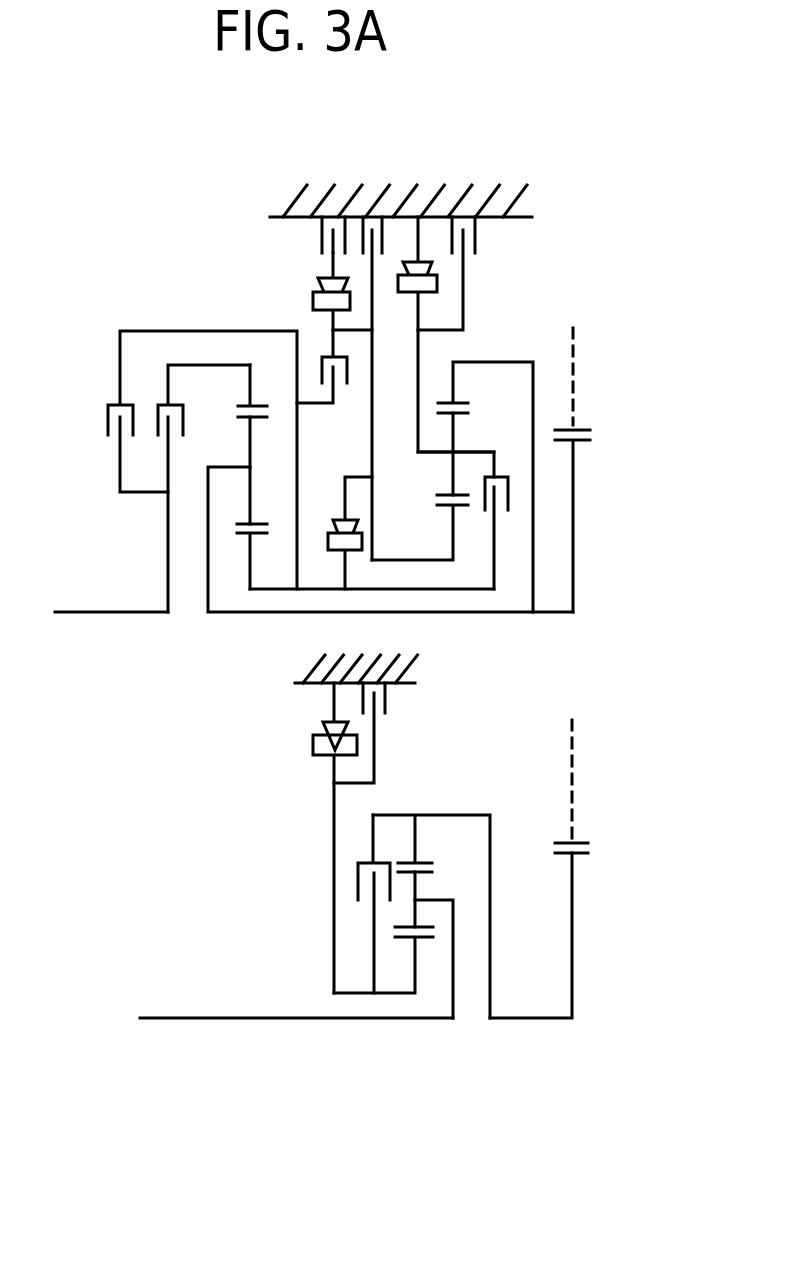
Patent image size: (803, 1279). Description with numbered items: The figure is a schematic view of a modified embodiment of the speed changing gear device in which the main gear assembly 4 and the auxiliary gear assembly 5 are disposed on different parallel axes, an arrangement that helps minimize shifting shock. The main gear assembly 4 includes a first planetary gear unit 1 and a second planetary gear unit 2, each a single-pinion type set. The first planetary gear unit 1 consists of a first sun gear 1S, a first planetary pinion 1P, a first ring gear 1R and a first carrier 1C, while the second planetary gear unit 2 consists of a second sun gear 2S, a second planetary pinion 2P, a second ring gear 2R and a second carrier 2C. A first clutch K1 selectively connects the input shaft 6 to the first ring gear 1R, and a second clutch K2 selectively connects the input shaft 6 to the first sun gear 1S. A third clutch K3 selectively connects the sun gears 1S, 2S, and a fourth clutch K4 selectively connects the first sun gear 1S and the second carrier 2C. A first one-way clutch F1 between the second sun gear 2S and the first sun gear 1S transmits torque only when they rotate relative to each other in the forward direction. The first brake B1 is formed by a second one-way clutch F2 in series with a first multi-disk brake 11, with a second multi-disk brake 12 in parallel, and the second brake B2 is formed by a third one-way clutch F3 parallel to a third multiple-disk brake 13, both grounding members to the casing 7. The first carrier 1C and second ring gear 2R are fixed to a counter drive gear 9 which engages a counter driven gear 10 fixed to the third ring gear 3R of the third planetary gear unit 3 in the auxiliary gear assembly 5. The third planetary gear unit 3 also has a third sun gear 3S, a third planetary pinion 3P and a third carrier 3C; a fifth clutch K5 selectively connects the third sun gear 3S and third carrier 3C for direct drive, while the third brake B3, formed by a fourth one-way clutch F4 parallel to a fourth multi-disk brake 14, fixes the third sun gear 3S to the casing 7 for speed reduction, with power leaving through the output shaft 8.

The first planetary gear unit 1 is at (374, 499).
The second planetary gear unit 2 is at (499, 489).
The third planetary gear unit 3 is at (406, 939).
The main gear assembly 4 is at (258, 614).
The auxiliary gear assembly 5 is at (467, 1060).
The input shaft 6 is at (75, 611).
The casing 7 is at (503, 197).
The output shaft 8 is at (190, 1016).
The counter drive gear 9 is at (574, 480).
The counter driven gear 10 is at (575, 370).
The first multi-disk brake 11 is at (322, 232).
The second multi-disk brake 12 is at (400, 216).
The third multiple-disk brake 13 is at (476, 237).
The fourth multi-disk brake 14 is at (387, 700).
The first brake B1 is at (336, 186).
The second brake B2 is at (464, 178).
The third brake B3 is at (294, 755).
The first one-way clutch F1 is at (339, 533).
The second one-way clutch F2 is at (319, 291).
The third one-way clutch F3 is at (446, 334).
The fourth one-way clutch F4 is at (312, 838).
The first clutch K1 is at (204, 488).
The second clutch K2 is at (187, 460).
The third clutch K3 is at (326, 390).
The fourth clutch K4 is at (508, 495).
The fifth clutch K5 is at (358, 882).
The first ring gear 1R is at (257, 403).
The first carrier 1C is at (220, 465).
The first planetary pinion 1P is at (251, 447).
The first sun gear 1S is at (258, 537).
The second ring gear 2R is at (460, 400).
The second carrier 2C is at (478, 450).
The second planetary pinion 2P is at (450, 472).
The second sun gear 2S is at (447, 507).
The third ring gear 3R is at (422, 862).
The third carrier 3C is at (448, 898).
The third planetary pinion 3P is at (415, 913).
The third sun gear 3S is at (422, 940).